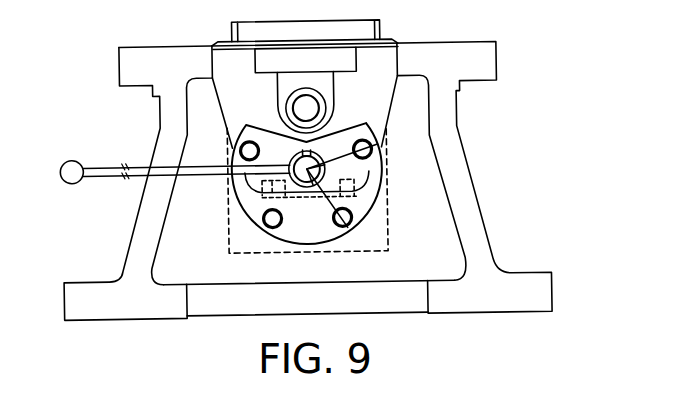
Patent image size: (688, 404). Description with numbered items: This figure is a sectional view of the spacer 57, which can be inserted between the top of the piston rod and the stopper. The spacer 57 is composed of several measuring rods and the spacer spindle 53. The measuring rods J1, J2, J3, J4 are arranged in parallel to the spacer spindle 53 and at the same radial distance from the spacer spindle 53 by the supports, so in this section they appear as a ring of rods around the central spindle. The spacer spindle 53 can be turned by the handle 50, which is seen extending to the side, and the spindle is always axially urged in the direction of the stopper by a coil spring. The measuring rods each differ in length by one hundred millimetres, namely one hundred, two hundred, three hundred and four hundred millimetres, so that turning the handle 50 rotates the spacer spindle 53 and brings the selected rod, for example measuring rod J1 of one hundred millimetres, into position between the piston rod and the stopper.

The handle 50 is at (118, 163).
The spacer spindle 53 is at (318, 168).
The spacer 57 is at (240, 214).
The measuring rod J1 is at (350, 149).
The measuring rod J2 is at (328, 222).
The measuring rod J3 is at (279, 217).
The measuring rod J4 is at (258, 149).